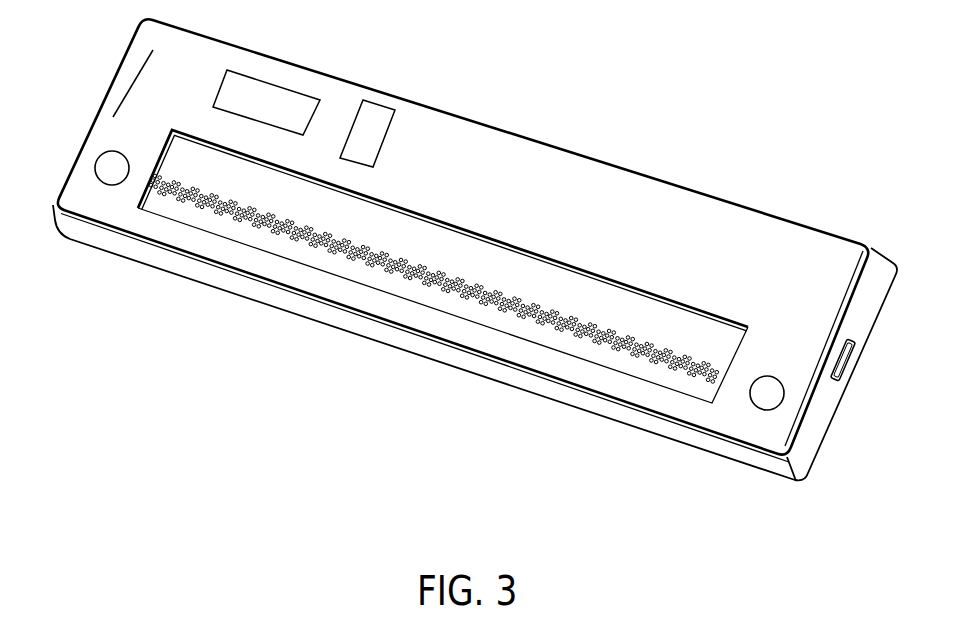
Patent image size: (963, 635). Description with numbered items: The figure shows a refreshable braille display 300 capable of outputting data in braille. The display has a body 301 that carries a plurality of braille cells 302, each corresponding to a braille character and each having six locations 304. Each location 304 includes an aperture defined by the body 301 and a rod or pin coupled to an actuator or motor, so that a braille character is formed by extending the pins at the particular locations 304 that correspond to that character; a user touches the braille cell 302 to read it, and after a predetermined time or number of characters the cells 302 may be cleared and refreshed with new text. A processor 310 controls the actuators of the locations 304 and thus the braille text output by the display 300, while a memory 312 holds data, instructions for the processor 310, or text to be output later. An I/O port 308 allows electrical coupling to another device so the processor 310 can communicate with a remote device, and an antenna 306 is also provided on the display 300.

The refreshable braille display 300 is at (503, 83).
The body 301 is at (808, 375).
The braille cells 302 is at (386, 264).
The locations 304 is at (148, 185).
The antenna 306 is at (141, 70).
The I/O port 308 is at (848, 353).
The processor 310 is at (288, 89).
The memory 312 is at (379, 100).